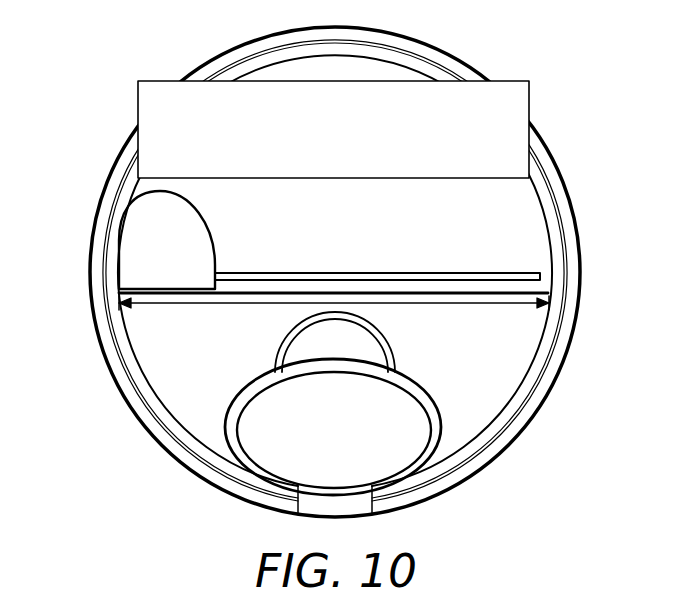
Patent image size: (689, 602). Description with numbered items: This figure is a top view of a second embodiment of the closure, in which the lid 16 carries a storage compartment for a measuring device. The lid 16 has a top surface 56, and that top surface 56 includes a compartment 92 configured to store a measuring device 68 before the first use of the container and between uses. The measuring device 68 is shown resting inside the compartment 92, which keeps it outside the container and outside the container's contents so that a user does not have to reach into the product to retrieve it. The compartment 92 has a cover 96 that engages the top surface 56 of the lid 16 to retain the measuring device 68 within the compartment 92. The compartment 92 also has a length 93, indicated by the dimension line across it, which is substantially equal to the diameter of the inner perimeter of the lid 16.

The lid 16 is at (158, 373).
The top surface 56 is at (507, 380).
The measuring device 68 is at (153, 242).
The compartment 92 is at (520, 242).
The length 93 is at (398, 305).
The cover 96 is at (510, 85).